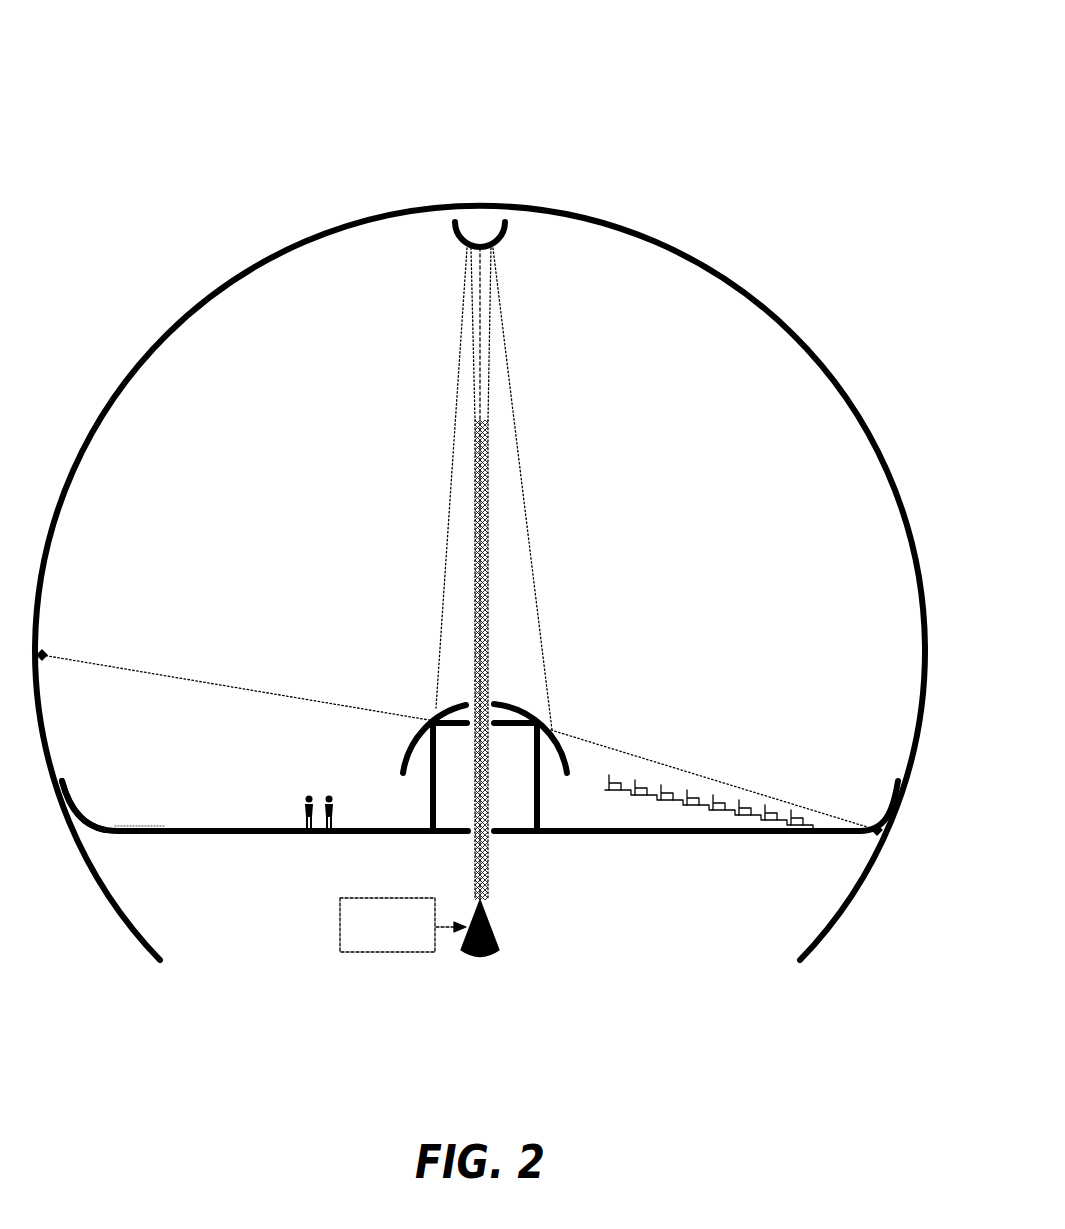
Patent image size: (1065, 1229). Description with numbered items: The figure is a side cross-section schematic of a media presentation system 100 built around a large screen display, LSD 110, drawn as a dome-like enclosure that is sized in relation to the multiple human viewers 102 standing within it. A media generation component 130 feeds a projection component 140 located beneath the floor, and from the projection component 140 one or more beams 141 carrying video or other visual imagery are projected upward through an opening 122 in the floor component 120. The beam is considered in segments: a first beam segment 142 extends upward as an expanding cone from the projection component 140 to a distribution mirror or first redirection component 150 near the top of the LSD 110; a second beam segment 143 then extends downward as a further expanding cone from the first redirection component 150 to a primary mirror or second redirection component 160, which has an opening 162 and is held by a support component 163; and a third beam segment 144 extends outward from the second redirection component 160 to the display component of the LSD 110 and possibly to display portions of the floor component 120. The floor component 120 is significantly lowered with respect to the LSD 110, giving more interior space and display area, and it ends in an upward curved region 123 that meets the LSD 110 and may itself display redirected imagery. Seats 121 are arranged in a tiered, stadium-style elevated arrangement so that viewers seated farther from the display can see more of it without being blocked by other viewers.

The media presentation system 100 is at (221, 69).
The LSD 110 is at (758, 302).
The first redirection component 150 is at (507, 238).
The beams 141 is at (481, 878).
The first beam segment 142 is at (473, 502).
The second beam segment 143 is at (520, 500).
The third beam segment 144 is at (125, 670).
The opening 162 is at (503, 688).
The second redirection component 160 is at (514, 708).
The support component 163 is at (433, 804).
The floor component 120 is at (197, 834).
The upward curved region 123 is at (60, 785).
The opening 122 is at (460, 840).
The human viewers 102 is at (313, 836).
The media generation component 130 is at (403, 925).
The projection component 140 is at (490, 962).
The seats 121 is at (637, 796).